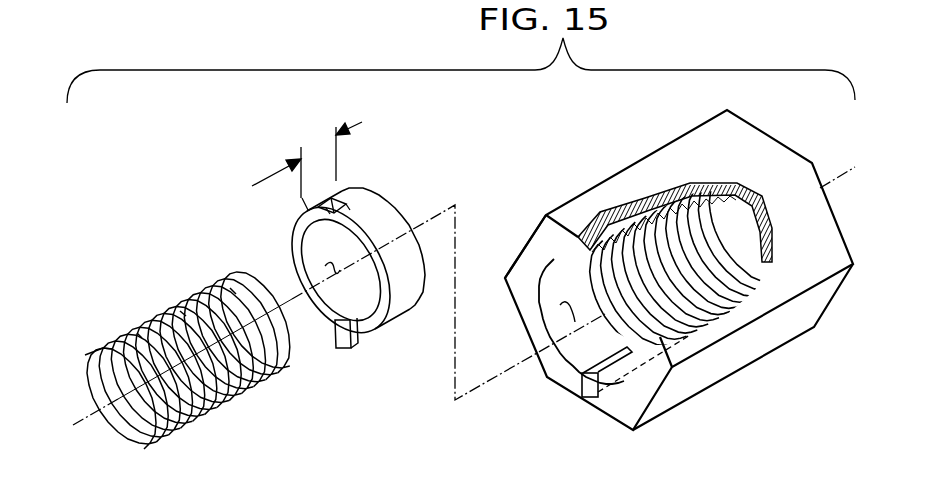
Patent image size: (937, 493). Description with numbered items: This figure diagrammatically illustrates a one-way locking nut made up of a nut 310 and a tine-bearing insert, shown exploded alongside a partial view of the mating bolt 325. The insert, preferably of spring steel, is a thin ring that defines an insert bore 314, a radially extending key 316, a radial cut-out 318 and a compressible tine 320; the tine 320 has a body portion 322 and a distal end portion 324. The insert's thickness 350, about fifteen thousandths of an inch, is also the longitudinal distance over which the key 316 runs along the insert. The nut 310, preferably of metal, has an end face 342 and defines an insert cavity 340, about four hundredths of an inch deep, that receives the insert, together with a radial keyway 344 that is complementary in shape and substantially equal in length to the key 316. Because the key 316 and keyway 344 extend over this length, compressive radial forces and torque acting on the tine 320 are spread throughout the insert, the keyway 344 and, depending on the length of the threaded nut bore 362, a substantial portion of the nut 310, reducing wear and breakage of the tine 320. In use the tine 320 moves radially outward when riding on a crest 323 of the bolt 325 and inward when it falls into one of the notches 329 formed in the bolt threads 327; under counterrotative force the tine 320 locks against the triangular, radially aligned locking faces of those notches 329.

The nut 310 is at (661, 263).
The end face 342 is at (540, 232).
The threaded nut bore 362 is at (767, 177).
The insert cavity 340 is at (560, 305).
The radial keyway 344 is at (580, 377).
The compressible tine 320 is at (326, 275).
The body portion 322 is at (338, 200).
The radially extending key 316 is at (335, 337).
The radial cut-out 318 is at (302, 198).
The distal end portion 324 is at (326, 208).
The insert bore 314 is at (325, 266).
The bolt 325 is at (187, 356).
The crest 323 is at (230, 288).
The notches 329 is at (180, 311).
The bolt threads 327 is at (137, 333).
The thickness 350 is at (362, 108).